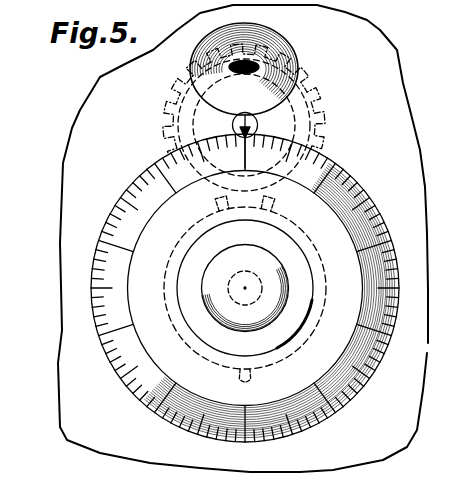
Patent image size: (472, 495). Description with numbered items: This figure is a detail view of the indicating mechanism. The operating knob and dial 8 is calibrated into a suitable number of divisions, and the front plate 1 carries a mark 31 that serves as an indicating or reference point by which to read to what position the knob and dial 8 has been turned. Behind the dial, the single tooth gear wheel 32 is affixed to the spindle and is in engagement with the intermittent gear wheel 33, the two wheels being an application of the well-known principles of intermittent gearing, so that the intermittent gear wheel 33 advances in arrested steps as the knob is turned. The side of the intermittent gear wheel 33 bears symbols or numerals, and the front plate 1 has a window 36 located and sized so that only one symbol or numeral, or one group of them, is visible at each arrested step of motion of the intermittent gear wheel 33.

The front plate 1 is at (82, 193).
The operating knob and dial 8 is at (132, 288).
The mark 31 is at (240, 119).
The single tooth gear wheel 32 is at (222, 362).
The intermittent gear wheel 33 is at (310, 118).
The window 36 is at (250, 63).